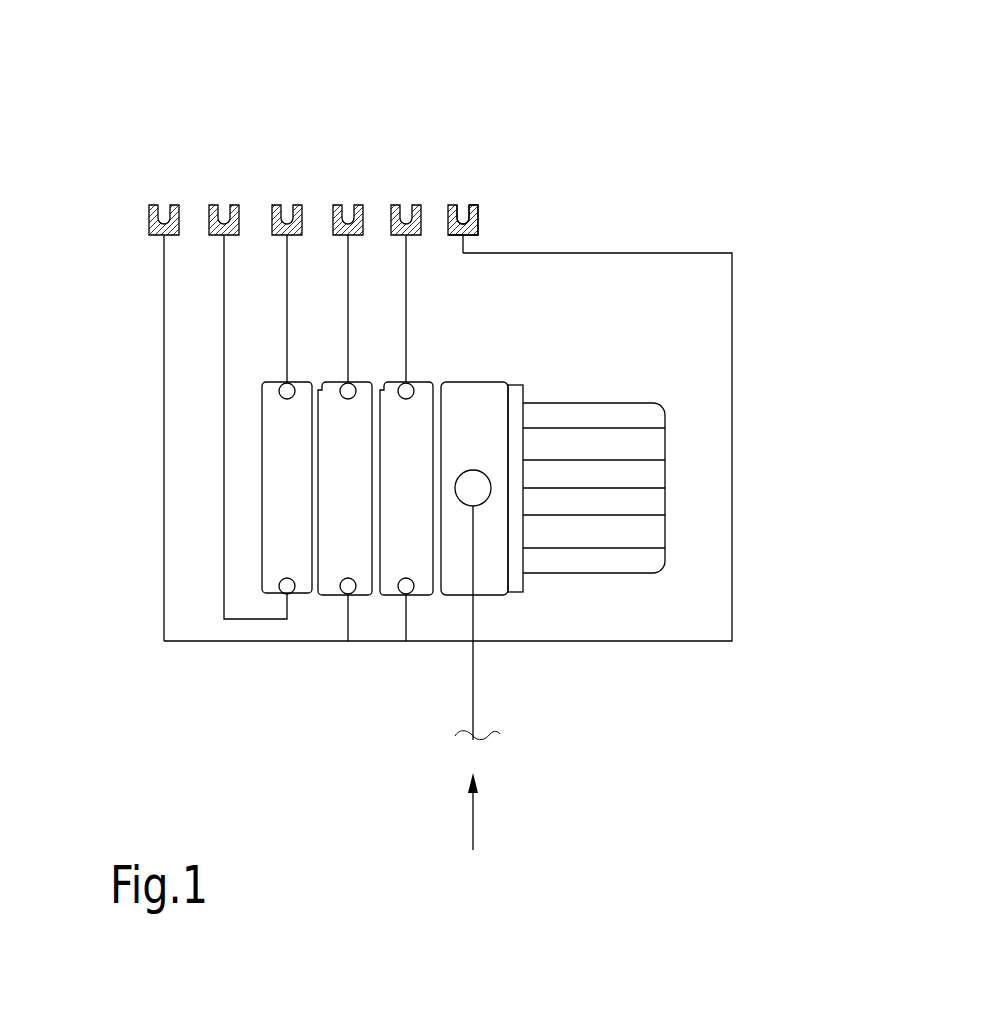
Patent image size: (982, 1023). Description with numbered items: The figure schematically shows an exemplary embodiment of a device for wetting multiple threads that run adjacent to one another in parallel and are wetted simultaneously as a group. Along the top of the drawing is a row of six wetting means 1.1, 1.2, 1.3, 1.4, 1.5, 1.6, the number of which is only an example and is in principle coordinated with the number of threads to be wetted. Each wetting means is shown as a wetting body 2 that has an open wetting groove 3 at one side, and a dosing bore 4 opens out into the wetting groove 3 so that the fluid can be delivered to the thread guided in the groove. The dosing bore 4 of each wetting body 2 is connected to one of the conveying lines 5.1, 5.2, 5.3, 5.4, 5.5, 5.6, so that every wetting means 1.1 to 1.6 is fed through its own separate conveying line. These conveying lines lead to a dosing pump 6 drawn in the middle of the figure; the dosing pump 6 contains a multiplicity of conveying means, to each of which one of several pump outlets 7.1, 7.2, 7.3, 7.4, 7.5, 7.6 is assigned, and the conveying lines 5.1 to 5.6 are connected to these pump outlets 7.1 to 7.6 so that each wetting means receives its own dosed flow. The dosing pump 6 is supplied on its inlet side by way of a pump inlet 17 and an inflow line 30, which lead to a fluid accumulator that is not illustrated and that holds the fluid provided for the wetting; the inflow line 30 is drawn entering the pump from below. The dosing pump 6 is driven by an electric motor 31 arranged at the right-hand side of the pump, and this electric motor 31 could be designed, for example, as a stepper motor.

The wetting means 1.1 is at (457, 207).
The wetting means 1.2 is at (395, 207).
The wetting means 1.3 is at (347, 207).
The wetting means 1.4 is at (285, 207).
The wetting means 1.5 is at (223, 207).
The wetting means 1.6 is at (162, 207).
The wetting body 2 is at (478, 225).
The wetting groove 3 is at (462, 210).
The dosing bore 4 is at (478, 228).
The conveying line 5.1 is at (732, 340).
The conveying line 5.2 is at (406, 338).
The conveying line 5.3 is at (352, 262).
The conveying line 5.4 is at (160, 441).
The conveying line 5.5 is at (287, 262).
The conveying line 5.6 is at (215, 380).
The dosing pump 6 is at (236, 489).
The pump outlet 7.1 is at (404, 598).
The pump outlet 7.2 is at (415, 382).
The pump outlet 7.3 is at (350, 598).
The pump outlet 7.4 is at (343, 380).
The pump outlet 7.5 is at (278, 596).
The pump outlet 7.6 is at (283, 378).
The pump inlet 17 is at (483, 496).
The inflow line 30 is at (473, 673).
The electric motor 31 is at (652, 476).